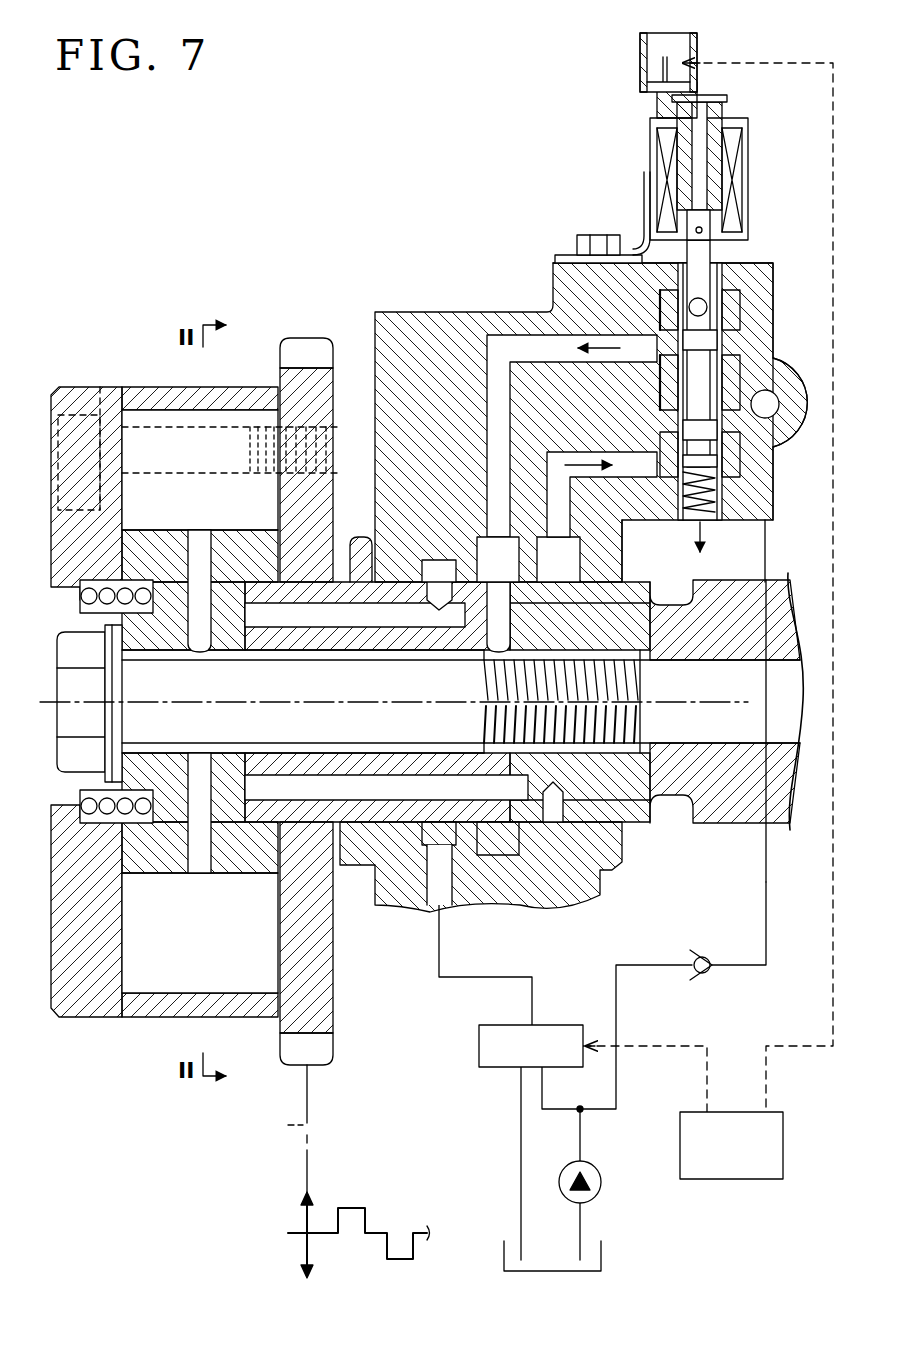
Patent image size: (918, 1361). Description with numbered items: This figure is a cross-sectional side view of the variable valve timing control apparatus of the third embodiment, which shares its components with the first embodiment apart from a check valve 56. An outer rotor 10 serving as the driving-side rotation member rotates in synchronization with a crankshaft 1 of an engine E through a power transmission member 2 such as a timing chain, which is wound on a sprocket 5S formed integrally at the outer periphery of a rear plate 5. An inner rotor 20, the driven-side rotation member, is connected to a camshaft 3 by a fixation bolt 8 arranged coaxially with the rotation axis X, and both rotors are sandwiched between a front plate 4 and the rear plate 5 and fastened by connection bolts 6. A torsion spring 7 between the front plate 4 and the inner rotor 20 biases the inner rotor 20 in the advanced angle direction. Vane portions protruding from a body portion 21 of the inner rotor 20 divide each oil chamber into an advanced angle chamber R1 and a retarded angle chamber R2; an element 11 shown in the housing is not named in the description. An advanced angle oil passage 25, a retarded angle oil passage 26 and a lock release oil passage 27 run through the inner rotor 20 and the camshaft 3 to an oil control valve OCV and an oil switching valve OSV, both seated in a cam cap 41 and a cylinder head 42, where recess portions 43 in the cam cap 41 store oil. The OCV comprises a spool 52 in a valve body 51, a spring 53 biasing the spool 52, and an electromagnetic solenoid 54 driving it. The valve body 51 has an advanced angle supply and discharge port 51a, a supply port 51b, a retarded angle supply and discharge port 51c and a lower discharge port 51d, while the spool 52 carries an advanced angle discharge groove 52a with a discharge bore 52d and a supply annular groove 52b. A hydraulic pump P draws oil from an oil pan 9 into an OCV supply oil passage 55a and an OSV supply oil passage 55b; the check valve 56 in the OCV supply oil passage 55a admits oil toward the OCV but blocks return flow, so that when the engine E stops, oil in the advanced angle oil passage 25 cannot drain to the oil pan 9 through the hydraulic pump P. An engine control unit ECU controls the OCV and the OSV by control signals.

The crankshaft 1 is at (300, 1232).
The power transmission member 2 is at (285, 1125).
The camshaft 3 is at (733, 828).
The front plate 4 is at (80, 1018).
The rear plate 5 is at (336, 940).
The sprocket 5S is at (336, 1050).
The connection bolts 6 is at (66, 398).
The torsion spring 7 is at (80, 792).
The fixation bolt 8 is at (73, 633).
The oil pan 9 is at (601, 1256).
The outer rotor 10 is at (172, 384).
The housing outer wall 11 is at (215, 386).
The inner rotor 20 is at (118, 852).
The body portion 21 is at (165, 875).
The advanced angle oil passage 25 is at (487, 420).
The retarded angle oil passage 26 is at (540, 420).
The lock release oil passage 27 is at (378, 620).
The cam cap 41 is at (432, 311).
The cylinder head 42 is at (612, 895).
The recess portions 43 is at (487, 547).
The valve body 51 is at (742, 270).
The advanced angle supply and discharge port 51a is at (640, 300).
The supply port 51b is at (770, 398).
The retarded angle supply and discharge port 51c is at (676, 537).
The discharge port 51d is at (705, 527).
The spool 52 is at (718, 465).
The advanced angle discharge groove 52a is at (742, 297).
The supply annular groove 52b is at (640, 400).
The discharge bore 52d is at (570, 262).
The spring 53 is at (718, 490).
The electromagnetic solenoid 54 is at (748, 172).
The OCV supply oil passage 55a is at (768, 882).
The OSV supply oil passage 55b is at (542, 1088).
The check valve 56 is at (706, 972).
The engine E is at (320, 183).
The rotation axis X is at (385, 702).
The hydraulic pump P is at (601, 1182).
The advanced angle chamber R1 is at (172, 445).
The retarded angle chamber R2 is at (178, 963).
The oil control valve OCV is at (648, 195).
The oil switching valve OSV is at (531, 1046).
The engine control unit ECU is at (731, 1145).